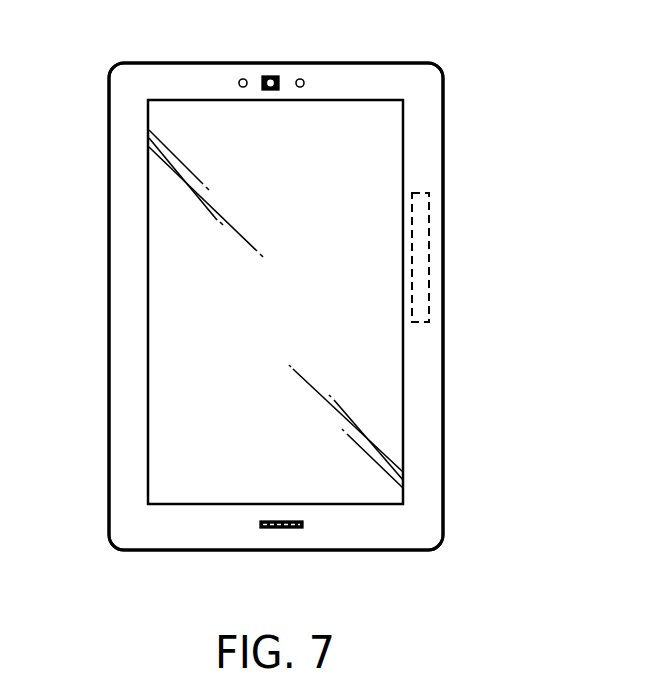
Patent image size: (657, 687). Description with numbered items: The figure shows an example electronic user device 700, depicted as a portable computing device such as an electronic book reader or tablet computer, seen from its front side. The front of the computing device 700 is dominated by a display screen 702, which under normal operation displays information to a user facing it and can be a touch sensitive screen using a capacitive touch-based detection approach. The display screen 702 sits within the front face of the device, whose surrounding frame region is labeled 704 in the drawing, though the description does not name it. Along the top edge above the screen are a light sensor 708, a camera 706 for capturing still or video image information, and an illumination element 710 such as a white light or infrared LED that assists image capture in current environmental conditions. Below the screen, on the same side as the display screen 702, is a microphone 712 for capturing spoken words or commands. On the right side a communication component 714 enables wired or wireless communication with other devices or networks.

The electronic user device 700 is at (586, 92).
The display screen 702 is at (147, 112).
The housing / bezel 704 is at (116, 413).
The camera 706 is at (270, 75).
The light sensor 708 is at (240, 80).
The illumination element 710 is at (303, 80).
The microphone 712 is at (281, 530).
The communication component 714 is at (430, 305).